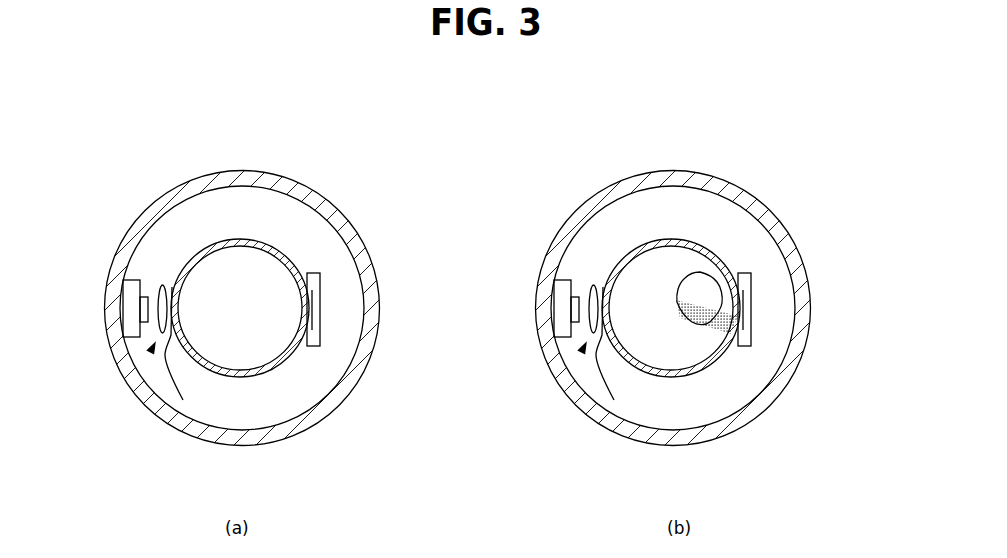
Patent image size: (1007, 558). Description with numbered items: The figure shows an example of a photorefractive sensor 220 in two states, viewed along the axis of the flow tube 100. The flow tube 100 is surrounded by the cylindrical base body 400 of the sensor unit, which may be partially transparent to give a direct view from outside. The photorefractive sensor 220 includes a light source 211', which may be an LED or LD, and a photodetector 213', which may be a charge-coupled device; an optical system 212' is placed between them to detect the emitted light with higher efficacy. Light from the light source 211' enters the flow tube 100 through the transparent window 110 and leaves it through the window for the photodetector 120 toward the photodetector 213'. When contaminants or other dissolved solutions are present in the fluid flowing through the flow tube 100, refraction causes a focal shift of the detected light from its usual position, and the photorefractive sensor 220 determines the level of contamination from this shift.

The base body 400 is at (193, 189).
The flow tube 100 is at (202, 253).
The transparent window 110 is at (183, 400).
The window for the photodetector 120 is at (313, 327).
The light source 211' is at (315, 308).
The optical system 212' is at (327, 295).
The photodetector 213' is at (587, 308).
The photorefractive sensor 220 is at (150, 352).